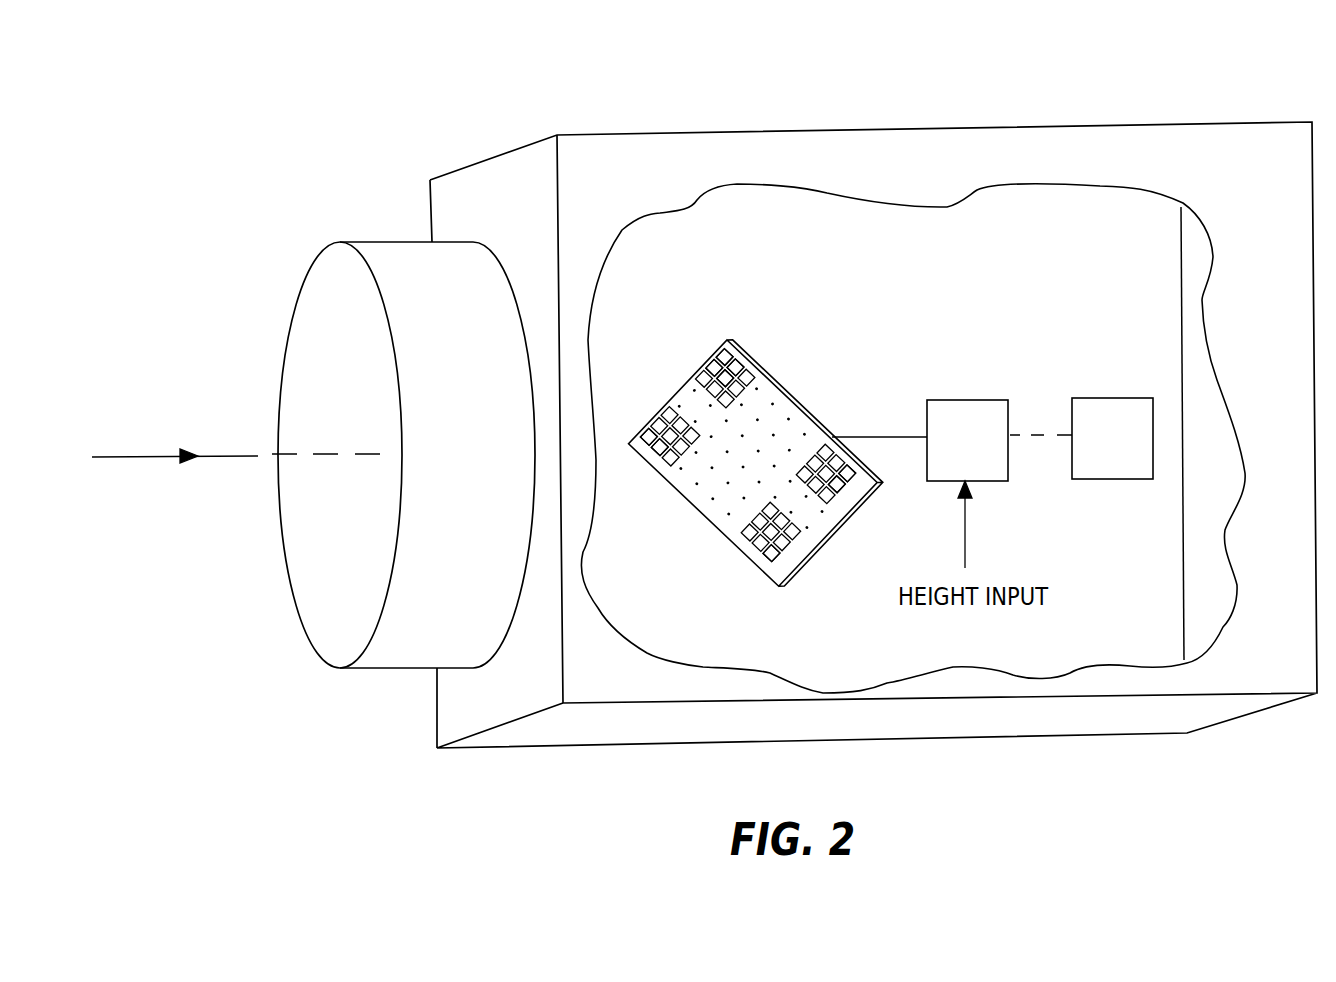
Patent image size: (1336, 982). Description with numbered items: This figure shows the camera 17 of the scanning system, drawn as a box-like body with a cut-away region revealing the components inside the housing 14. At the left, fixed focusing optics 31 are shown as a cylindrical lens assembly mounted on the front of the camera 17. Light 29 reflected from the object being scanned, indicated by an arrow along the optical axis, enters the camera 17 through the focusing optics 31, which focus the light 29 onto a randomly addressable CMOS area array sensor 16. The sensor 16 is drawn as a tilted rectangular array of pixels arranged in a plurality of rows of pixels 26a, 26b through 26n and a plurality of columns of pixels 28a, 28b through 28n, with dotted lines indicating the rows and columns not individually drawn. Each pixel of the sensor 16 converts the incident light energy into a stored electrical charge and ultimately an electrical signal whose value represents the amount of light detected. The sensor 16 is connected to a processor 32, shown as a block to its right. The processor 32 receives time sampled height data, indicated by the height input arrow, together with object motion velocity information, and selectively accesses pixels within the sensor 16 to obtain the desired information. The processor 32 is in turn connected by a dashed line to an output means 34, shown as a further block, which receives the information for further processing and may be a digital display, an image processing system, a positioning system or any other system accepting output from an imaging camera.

The housing 14 is at (1196, 240).
The CMOS area array sensor 16 is at (722, 322).
The camera 17 is at (912, 128).
The row of pixels 26a is at (765, 403).
The row of pixels 26b is at (732, 438).
The row of pixels 26n is at (687, 486).
The column of pixels 28a is at (710, 394).
The column of pixels 28b is at (754, 436).
The column of pixels 28n is at (830, 507).
The light 29 is at (134, 457).
The fixed focusing optics 31 is at (392, 652).
The processor 32 is at (950, 400).
The output means 34 is at (1086, 398).